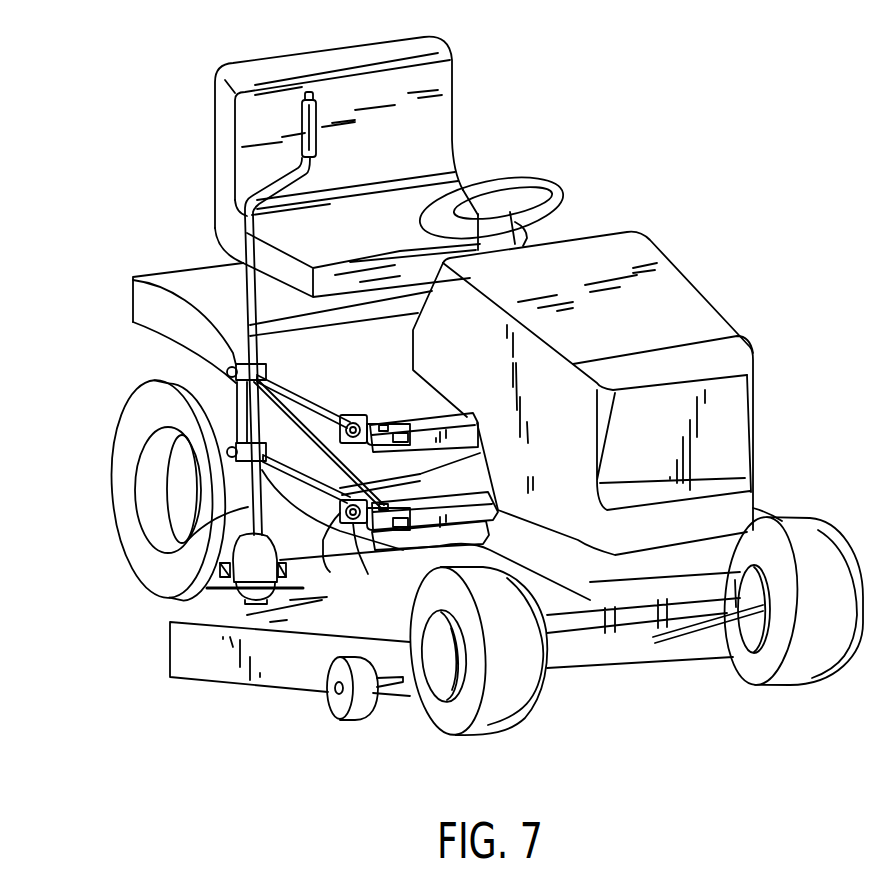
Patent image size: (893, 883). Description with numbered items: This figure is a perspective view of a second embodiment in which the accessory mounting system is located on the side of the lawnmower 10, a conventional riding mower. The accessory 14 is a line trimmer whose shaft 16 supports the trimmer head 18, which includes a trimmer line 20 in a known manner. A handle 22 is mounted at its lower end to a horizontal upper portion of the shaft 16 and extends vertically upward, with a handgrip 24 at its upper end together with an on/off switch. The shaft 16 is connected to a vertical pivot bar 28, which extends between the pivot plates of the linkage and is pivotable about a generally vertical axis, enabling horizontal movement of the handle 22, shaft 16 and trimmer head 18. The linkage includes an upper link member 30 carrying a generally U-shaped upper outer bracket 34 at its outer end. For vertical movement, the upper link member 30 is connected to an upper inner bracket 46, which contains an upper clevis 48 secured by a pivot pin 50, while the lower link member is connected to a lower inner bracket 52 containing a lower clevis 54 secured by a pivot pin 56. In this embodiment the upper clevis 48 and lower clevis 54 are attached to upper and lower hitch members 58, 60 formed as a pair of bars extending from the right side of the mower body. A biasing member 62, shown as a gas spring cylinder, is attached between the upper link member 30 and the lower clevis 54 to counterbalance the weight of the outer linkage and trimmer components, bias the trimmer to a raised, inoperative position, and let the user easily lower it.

The lawnmower 10 is at (657, 120).
The accessory 14 is at (225, 500).
The shaft 16 is at (188, 540).
The trimmer head 18 is at (228, 603).
The trimmer line 20 is at (190, 611).
The handle 22 is at (243, 240).
The handgrip 24 is at (305, 118).
The vertical pivot bar 28 is at (237, 405).
The upper link member 30 is at (303, 393).
The upper outer bracket 34 is at (283, 466).
The upper inner bracket 46 is at (353, 413).
The upper clevis 48 is at (363, 415).
The pivot pin 50 is at (345, 445).
The lower inner bracket 52 is at (338, 554).
The lower clevis 54 is at (392, 556).
The pivot pin 56 is at (374, 560).
The upper rear hitch member 58 is at (447, 413).
The lower rear hitch member 60 is at (467, 497).
The biasing member 62 is at (367, 462).